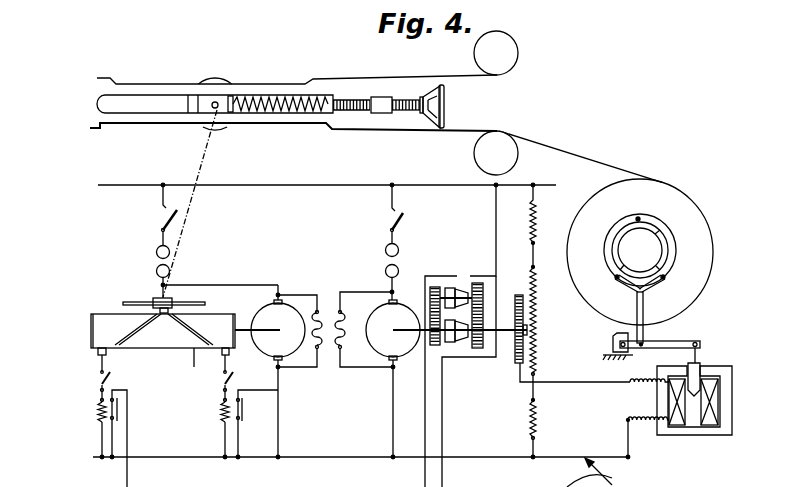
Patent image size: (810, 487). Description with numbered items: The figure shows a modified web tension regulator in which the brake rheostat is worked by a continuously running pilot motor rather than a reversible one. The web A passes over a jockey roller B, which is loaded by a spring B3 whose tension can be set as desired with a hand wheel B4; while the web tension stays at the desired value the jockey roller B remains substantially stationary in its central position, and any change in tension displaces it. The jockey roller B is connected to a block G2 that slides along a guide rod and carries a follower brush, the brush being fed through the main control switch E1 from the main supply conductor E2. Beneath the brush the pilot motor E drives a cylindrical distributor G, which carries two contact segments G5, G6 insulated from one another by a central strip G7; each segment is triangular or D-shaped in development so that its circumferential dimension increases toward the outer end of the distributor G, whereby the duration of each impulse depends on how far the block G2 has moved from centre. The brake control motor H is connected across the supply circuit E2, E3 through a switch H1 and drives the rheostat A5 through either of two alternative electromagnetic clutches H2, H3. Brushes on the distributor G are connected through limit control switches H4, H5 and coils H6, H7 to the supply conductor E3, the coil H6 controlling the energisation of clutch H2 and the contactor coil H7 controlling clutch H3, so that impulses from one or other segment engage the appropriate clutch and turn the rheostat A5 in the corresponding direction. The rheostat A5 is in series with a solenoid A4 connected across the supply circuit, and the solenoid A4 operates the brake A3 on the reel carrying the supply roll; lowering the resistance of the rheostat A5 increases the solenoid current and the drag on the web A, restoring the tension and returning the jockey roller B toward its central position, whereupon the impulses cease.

The jockey roller B is at (213, 81).
The spring B3 is at (255, 100).
The hand wheel B4 is at (445, 112).
The web A is at (560, 147).
The brake A3 is at (670, 228).
The solenoid A4 is at (700, 397).
The rheostat A5 is at (526, 315).
The pilot motor E is at (283, 320).
The main control switch E1 is at (180, 221).
The main supply conductor E2 is at (118, 184).
The supply conductor E3 is at (195, 458).
The distributor G is at (183, 353).
The block G2 is at (157, 297).
The contact segment G5 is at (107, 315).
The contact segment G6 is at (215, 328).
The central strip G7 is at (198, 370).
The brake control motor H is at (411, 350).
The switch H1 is at (406, 220).
The electromagnetic clutch H2 is at (457, 288).
The electromagnetic clutch H3 is at (459, 349).
The limit control switch H4 is at (108, 380).
The limit control switch H5 is at (230, 372).
The coil H6 is at (113, 417).
The contactor coil H7 is at (242, 413).